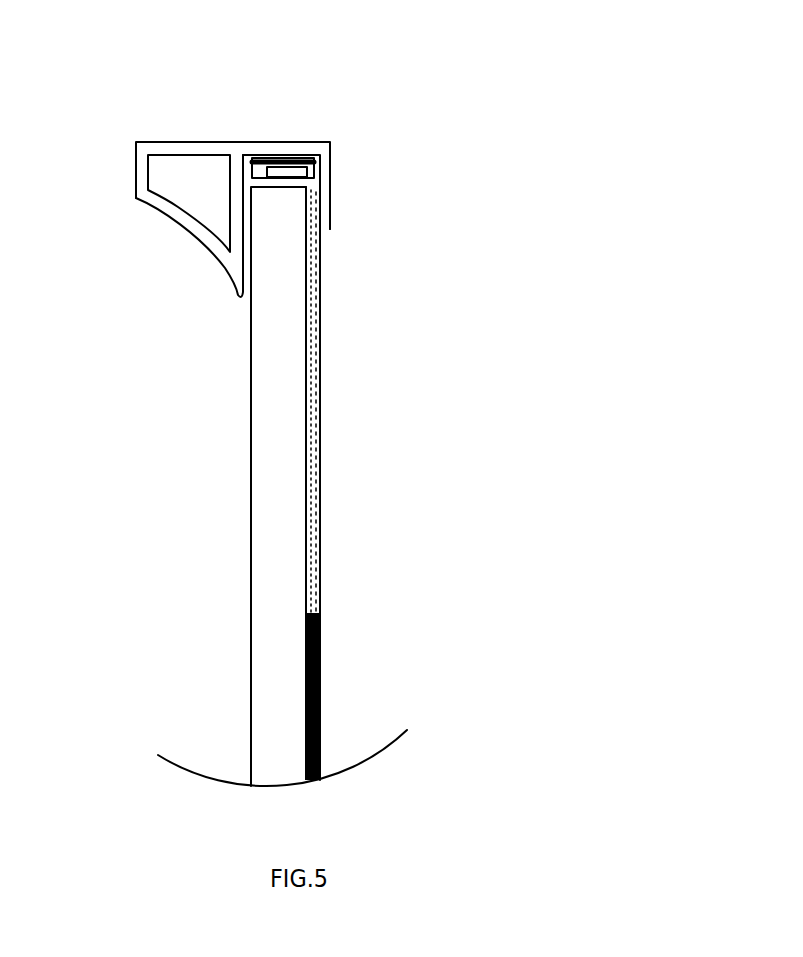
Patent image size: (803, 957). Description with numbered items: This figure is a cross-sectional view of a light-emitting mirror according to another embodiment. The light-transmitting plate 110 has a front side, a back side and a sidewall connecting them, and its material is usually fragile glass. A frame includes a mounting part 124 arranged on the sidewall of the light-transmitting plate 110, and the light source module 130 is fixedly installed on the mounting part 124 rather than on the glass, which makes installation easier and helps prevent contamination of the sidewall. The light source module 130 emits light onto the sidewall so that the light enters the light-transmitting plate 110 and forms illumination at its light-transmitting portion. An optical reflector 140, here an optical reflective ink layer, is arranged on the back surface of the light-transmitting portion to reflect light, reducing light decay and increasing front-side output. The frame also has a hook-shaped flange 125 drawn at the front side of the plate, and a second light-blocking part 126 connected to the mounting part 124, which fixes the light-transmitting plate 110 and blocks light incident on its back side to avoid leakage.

The light-transmitting plate 110 is at (275, 700).
The mounting part 124 is at (280, 144).
The hook flange 125 is at (243, 268).
The second light-blocking part 126 is at (336, 231).
The light source module 130 is at (318, 153).
The optical reflector 140 is at (320, 358).